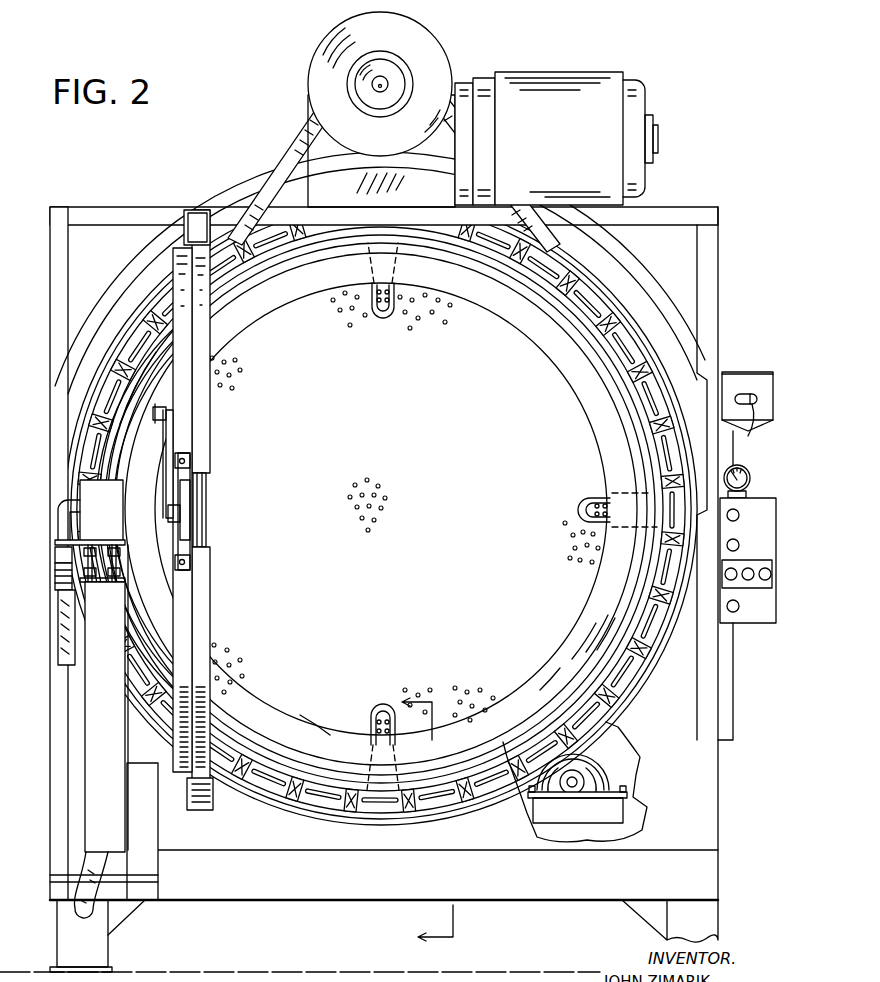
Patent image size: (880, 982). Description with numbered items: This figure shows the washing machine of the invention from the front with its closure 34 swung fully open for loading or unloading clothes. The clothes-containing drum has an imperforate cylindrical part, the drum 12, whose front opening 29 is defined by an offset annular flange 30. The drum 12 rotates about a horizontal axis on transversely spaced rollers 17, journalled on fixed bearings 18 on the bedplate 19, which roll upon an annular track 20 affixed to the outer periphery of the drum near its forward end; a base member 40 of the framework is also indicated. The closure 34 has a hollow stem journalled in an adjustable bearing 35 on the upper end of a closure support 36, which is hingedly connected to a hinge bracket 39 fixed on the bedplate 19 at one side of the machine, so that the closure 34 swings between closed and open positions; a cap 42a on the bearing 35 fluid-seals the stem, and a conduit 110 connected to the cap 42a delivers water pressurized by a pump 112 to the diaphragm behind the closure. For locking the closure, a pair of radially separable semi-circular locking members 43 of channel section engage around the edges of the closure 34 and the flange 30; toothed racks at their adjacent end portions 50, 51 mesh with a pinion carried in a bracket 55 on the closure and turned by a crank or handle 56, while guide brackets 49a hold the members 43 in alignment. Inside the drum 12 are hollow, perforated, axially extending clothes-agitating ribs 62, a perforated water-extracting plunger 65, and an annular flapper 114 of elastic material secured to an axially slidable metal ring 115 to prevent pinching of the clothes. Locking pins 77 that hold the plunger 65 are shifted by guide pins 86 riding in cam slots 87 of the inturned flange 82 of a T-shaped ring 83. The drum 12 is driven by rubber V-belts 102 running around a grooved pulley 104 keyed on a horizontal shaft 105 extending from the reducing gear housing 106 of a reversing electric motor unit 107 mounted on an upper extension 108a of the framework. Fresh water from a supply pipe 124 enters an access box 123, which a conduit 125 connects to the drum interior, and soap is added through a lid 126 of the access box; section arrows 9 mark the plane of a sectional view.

The drum 12 is at (592, 330).
The rollers 17 is at (606, 768).
The fixed bearings 18 is at (556, 790).
The bedplate 19 is at (283, 846).
The annular track 20 is at (580, 742).
The front opening 29 is at (640, 631).
The offset annular flange 30 is at (640, 685).
The closure 34 is at (188, 612).
The adjustable bearing 35 is at (94, 486).
The closure support 36 is at (105, 711).
The hinge bracket 39 is at (160, 888).
The base beam 40 is at (278, 900).
The cap 42a is at (75, 500).
The locking members 43 is at (208, 368).
The guide brackets 49a is at (193, 208).
The end portions 50 is at (205, 462).
The end portions 51 is at (209, 545).
The bracket 55 is at (190, 503).
The crank or handle 56 is at (168, 463).
The clothes-agitating ribs 62 is at (580, 505).
The water-extracting plunger 65 is at (412, 243).
The locking pins 77 is at (602, 315).
The inturned annular flange 82 is at (664, 405).
The T-shaped ring 83 is at (616, 326).
The guide pins 86 is at (640, 370).
The cam slots 87 is at (574, 290).
The section line 9- 9 is at (437, 820).
The V-belts 102 is at (289, 150).
The grooved pulley 104 is at (352, 67).
The horizontal shaft 105 is at (388, 76).
The reducing gear housing 106 is at (329, 33).
The electric motor unit 107 is at (548, 70).
The upper extension 108a is at (124, 207).
The conduit 110 is at (65, 632).
The pump 112 is at (142, 350).
The annular flapper 114 is at (594, 408).
The annular ring 115 is at (634, 428).
The access box 123 is at (744, 386).
The supply pipe 124 is at (750, 410).
The conduit 125 is at (742, 470).
The lid 126 is at (764, 372).